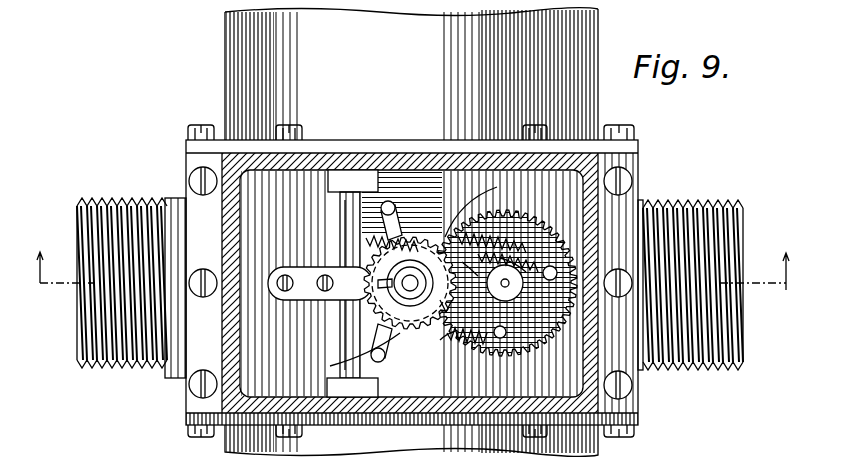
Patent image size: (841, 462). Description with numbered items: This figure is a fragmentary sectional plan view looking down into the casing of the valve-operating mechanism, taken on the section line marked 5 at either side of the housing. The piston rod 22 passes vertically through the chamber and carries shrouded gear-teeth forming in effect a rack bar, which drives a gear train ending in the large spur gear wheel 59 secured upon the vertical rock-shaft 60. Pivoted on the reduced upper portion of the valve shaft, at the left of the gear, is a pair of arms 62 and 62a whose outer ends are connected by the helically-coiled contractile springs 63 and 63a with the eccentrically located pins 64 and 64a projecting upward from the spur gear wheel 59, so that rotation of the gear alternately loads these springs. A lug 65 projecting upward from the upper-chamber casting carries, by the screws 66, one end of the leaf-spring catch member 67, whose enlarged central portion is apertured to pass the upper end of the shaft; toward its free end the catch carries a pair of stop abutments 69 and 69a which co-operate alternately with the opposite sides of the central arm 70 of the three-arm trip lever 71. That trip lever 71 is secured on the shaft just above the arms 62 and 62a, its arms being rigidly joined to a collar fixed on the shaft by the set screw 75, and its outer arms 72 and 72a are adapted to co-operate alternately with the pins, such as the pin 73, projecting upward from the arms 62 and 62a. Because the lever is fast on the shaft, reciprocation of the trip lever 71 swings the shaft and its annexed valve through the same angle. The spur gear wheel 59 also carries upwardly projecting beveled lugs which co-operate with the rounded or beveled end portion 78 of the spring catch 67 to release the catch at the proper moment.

The section line 5- 5 is at (410, 274).
The piston rod 22 is at (348, 338).
The large spur gear wheel 59 is at (552, 281).
The vertical rock-shaft 60 is at (512, 283).
The arm 62 is at (390, 201).
The arm 62a is at (385, 362).
The helically-coiled contractile spring 63 is at (488, 252).
The helically-coiled contractile spring 63a is at (451, 305).
The eccentrically located pin 64 is at (547, 268).
The eccentrically located pin 64a is at (506, 333).
The lug 65 is at (322, 320).
The screws 66 is at (295, 288).
The leaf-spring catch member 67 is at (370, 280).
The stop abutment 69 is at (470, 246).
The stop abutment 69a is at (476, 305).
The central arm 70 is at (448, 345).
The three-arm trip lever 71 is at (512, 262).
The outer arm 72 is at (497, 188).
The outer arm 72a is at (375, 328).
The pin 73 is at (366, 244).
The set screw 75 is at (385, 289).
The rounded or beveled end portion 78 is at (468, 256).